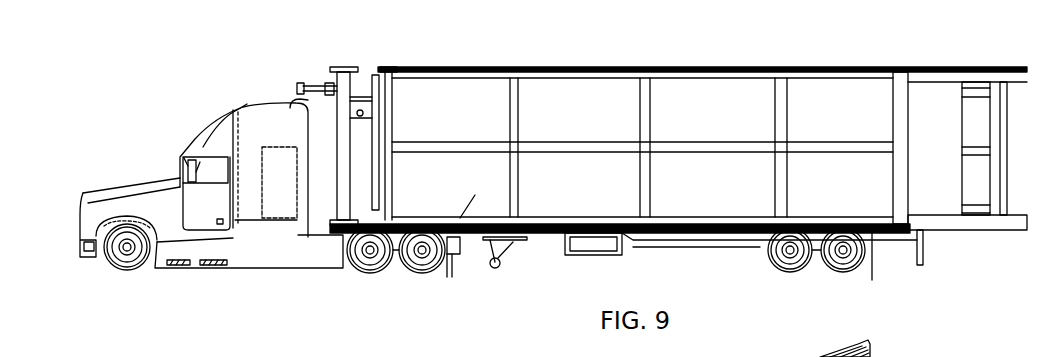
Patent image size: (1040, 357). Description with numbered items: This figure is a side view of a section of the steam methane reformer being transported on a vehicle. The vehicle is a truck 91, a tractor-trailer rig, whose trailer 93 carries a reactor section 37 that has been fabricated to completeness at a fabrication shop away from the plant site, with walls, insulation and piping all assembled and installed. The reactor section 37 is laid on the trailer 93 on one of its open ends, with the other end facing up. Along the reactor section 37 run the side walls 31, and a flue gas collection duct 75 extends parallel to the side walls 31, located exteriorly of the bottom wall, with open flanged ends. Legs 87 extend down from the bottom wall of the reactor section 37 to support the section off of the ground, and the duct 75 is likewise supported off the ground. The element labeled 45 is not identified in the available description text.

The truck 91 is at (253, 250).
The side walls 31 is at (445, 258).
The top rail 45 is at (547, 68).
The reactor section 37 is at (737, 85).
The flue gas collection duct 75 is at (930, 88).
The legs 87 is at (953, 230).
The trailer 93 is at (705, 242).